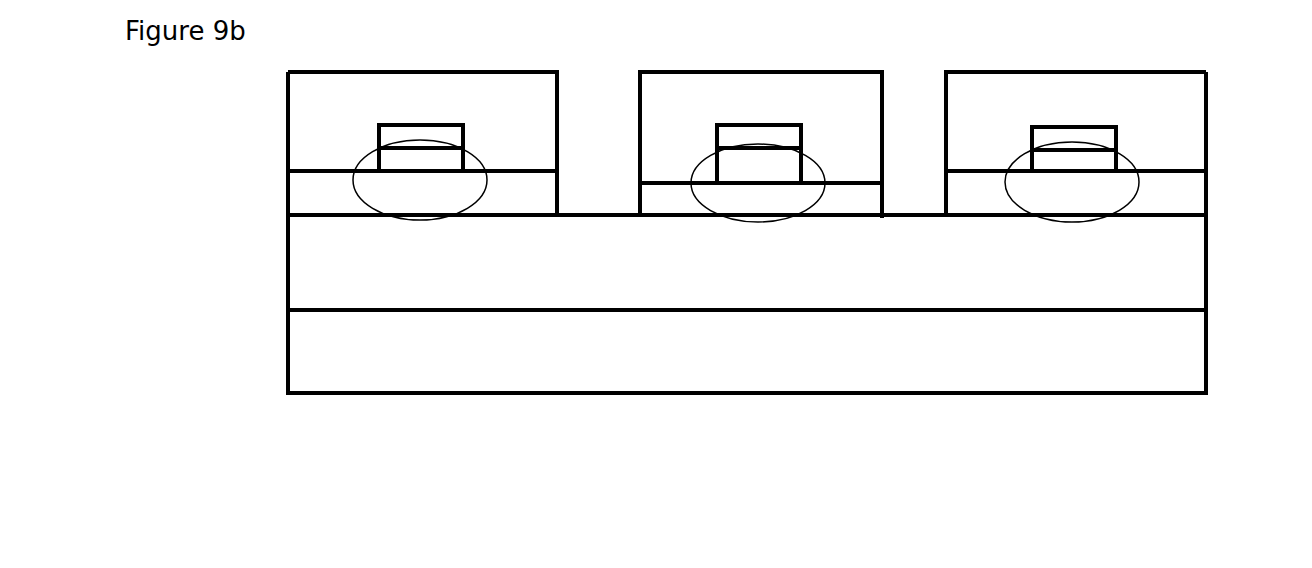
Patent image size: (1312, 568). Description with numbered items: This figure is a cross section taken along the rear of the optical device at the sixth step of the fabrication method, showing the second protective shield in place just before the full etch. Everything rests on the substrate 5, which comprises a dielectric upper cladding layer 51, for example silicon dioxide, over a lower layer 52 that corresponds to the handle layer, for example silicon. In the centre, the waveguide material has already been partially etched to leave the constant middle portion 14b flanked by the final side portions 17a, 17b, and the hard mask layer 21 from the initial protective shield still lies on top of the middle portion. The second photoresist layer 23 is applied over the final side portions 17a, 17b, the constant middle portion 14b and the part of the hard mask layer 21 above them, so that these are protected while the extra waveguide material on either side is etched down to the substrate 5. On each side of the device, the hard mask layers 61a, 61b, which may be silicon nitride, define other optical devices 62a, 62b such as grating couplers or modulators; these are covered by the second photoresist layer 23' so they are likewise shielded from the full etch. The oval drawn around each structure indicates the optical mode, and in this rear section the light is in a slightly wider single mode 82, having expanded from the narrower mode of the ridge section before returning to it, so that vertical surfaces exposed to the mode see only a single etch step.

The substrate 5 is at (520, 162).
The dielectric upper cladding layer 51 is at (1105, 277).
The substrate base layer 52 is at (1115, 359).
The second photoresist layer 23' is at (770, 164).
The second photoresist layer 23 is at (767, 101).
The hard mask layer 61a is at (428, 135).
The other optical device 62a is at (448, 162).
The hard mask layer 61b is at (1075, 123).
The other optical device 62b is at (1105, 157).
The hard mask layer 21 is at (748, 132).
The constant middle portion 14b is at (816, 200).
The final side portion 17a is at (855, 180).
The final side portion 17b is at (680, 183).
The slightly wider single mode 82 is at (692, 193).